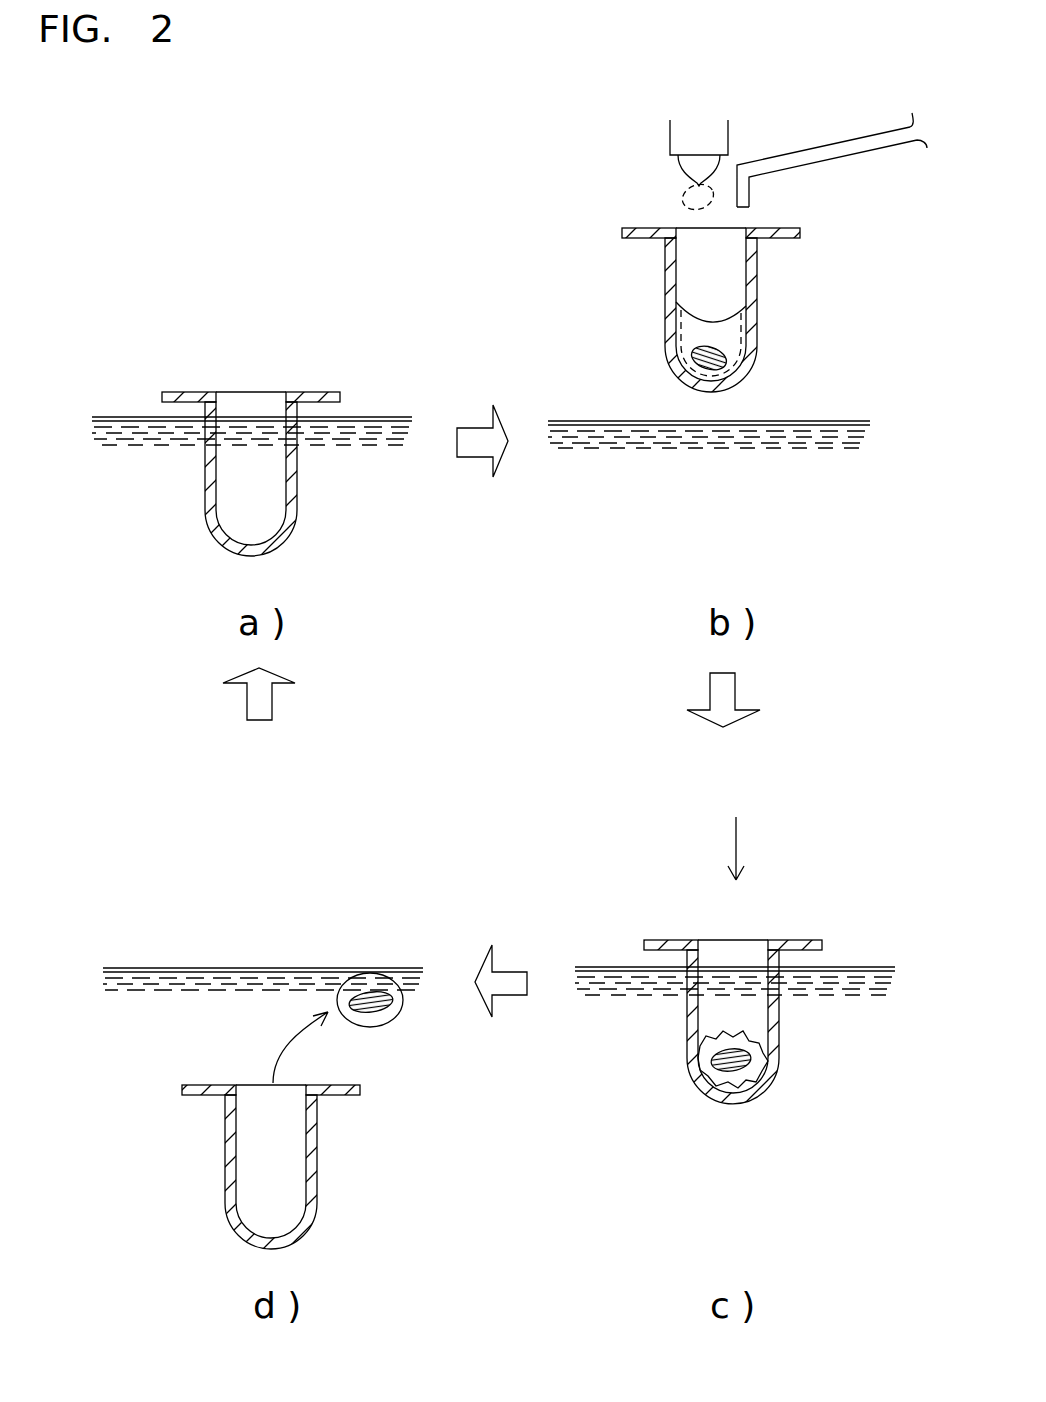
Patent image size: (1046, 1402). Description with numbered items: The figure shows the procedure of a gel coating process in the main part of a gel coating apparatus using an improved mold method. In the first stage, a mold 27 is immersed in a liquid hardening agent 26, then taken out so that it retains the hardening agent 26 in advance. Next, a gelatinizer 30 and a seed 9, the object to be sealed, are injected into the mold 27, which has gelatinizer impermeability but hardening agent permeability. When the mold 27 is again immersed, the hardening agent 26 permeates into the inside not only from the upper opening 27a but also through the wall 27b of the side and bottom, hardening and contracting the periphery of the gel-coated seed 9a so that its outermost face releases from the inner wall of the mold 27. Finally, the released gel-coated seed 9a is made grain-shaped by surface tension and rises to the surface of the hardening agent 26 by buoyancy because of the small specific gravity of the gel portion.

The mold 27 is at (736, 286).
The upper opening 27a is at (680, 228).
The wall 27b is at (668, 289).
The gelatinizer 30 is at (735, 328).
The seed 9 is at (696, 365).
The gel-coated seed 9a is at (706, 1093).
The hardening agent 26 is at (722, 502).